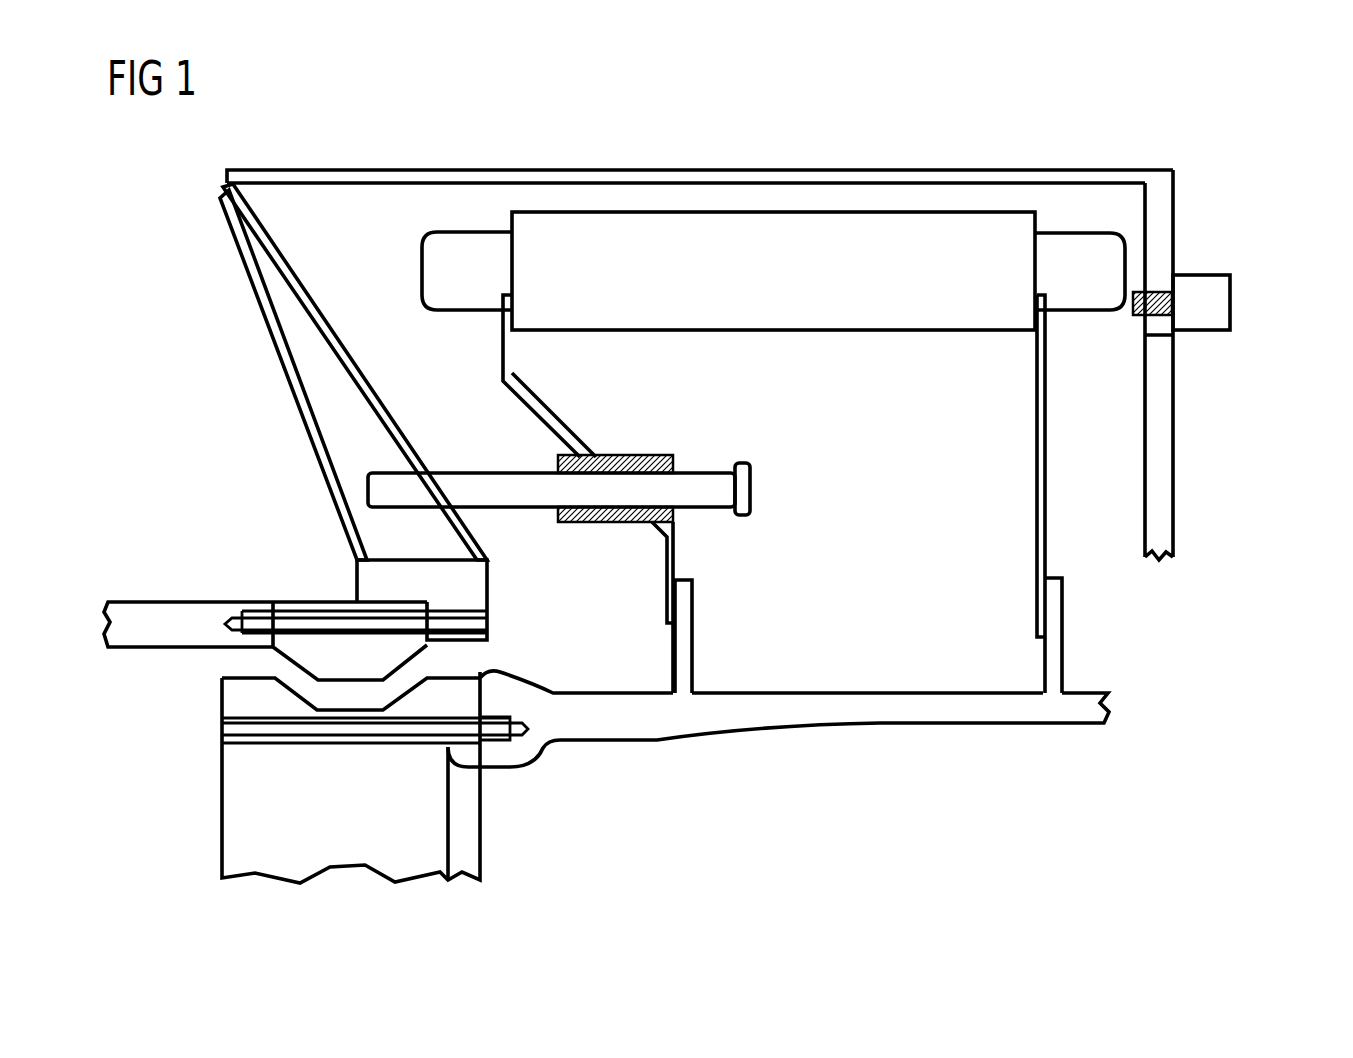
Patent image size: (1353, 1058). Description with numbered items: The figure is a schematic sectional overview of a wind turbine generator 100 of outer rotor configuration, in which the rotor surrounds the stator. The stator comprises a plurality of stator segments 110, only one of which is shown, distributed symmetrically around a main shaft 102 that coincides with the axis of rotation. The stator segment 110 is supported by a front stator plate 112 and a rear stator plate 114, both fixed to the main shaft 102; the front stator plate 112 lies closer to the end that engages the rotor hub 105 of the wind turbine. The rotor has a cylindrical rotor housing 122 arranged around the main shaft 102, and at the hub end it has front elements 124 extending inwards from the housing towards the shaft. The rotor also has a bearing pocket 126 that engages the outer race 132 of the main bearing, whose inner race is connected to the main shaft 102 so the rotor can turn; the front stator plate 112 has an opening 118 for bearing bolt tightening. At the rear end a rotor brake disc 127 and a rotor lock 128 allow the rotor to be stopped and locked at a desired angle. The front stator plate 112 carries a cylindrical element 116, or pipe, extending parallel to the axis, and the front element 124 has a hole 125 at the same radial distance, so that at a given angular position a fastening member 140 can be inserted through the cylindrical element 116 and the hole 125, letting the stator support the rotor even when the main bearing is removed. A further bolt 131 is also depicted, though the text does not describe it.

The wind turbine generator 100 is at (1074, 146).
The main shaft 102 is at (1083, 710).
The rotor hub 105 is at (165, 610).
The stator segment 110 is at (790, 322).
The front stator plate 112 is at (542, 403).
The rear stator plate 114 is at (1040, 380).
The cylindrical element 116 is at (550, 441).
The opening 118 is at (668, 555).
The rotor housing 122 is at (757, 178).
The front element 124 is at (277, 257).
The hole 125 is at (387, 456).
The bearing pocket 126 is at (475, 580).
The rotor brake disc 127 is at (1165, 214).
The rotor lock 128 is at (1220, 302).
The lower block bolt 131 is at (290, 740).
The outer race 132 is at (422, 611).
The fastening member 140 is at (771, 487).